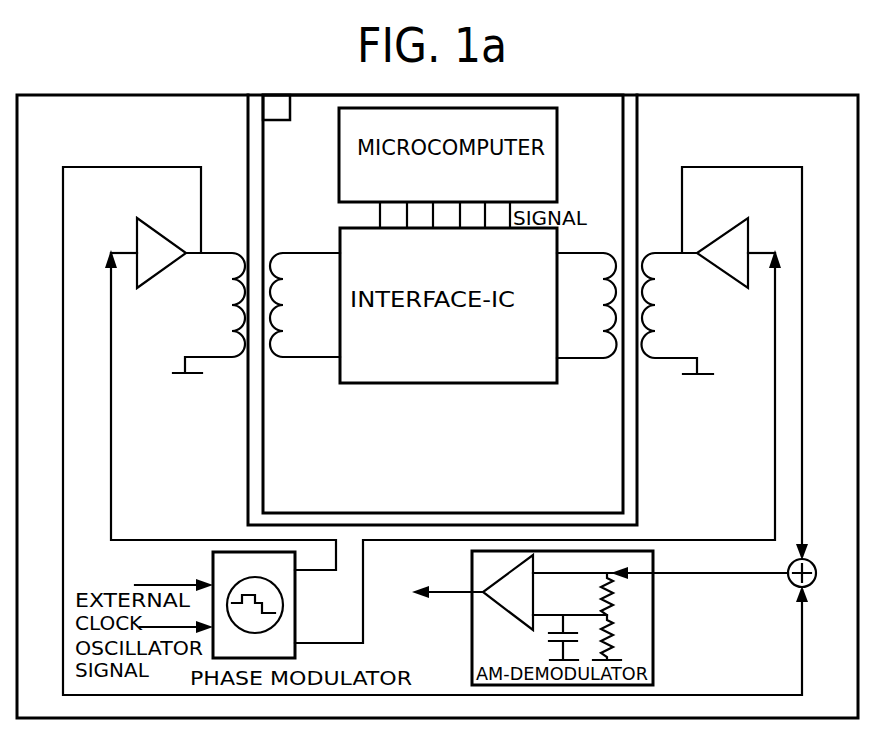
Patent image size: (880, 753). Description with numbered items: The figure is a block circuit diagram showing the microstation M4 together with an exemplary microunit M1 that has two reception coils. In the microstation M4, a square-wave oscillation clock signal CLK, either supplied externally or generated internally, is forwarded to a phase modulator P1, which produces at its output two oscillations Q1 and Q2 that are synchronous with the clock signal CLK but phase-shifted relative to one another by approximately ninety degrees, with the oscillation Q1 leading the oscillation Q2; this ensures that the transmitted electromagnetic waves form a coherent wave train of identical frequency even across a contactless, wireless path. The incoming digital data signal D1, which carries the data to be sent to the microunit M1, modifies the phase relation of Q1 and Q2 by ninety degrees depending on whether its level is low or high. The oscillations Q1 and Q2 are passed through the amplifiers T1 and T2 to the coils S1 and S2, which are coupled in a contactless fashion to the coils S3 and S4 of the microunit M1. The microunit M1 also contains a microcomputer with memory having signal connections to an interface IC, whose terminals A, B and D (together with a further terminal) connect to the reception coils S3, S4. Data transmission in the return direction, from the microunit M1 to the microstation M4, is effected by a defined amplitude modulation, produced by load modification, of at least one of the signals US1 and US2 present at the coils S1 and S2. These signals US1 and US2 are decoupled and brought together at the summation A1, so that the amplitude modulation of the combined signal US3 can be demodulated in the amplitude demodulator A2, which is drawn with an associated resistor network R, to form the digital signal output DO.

The microunit M1 is at (443, 304).
The microstation M4 is at (115, 125).
The signal of coil S1 US1 is at (435, 418).
The signal of coil S2 US2 is at (745, 349).
The summed signal US3 is at (660, 564).
The amplifier T1 is at (148, 270).
The amplifier T2 is at (736, 270).
The coil S1 is at (209, 313).
The coil S2 is at (678, 313).
The coil S3 is at (591, 305).
The coil S4 is at (290, 305).
The phase modulator P1 is at (254, 605).
The oscillation Q1 is at (220, 410).
The oscillation Q2 is at (538, 446).
The digital data signal D1 is at (174, 576).
The square-wave oscillation clock signal CLK is at (176, 618).
The digital signal output DO is at (447, 581).
The summation A1 is at (735, 576).
The amplitude demodulator A2 is at (542, 592).
The resistor R is at (611, 616).
The interface terminal A is at (323, 255).
The interface terminal B is at (323, 360).
The interface terminal D is at (569, 360).